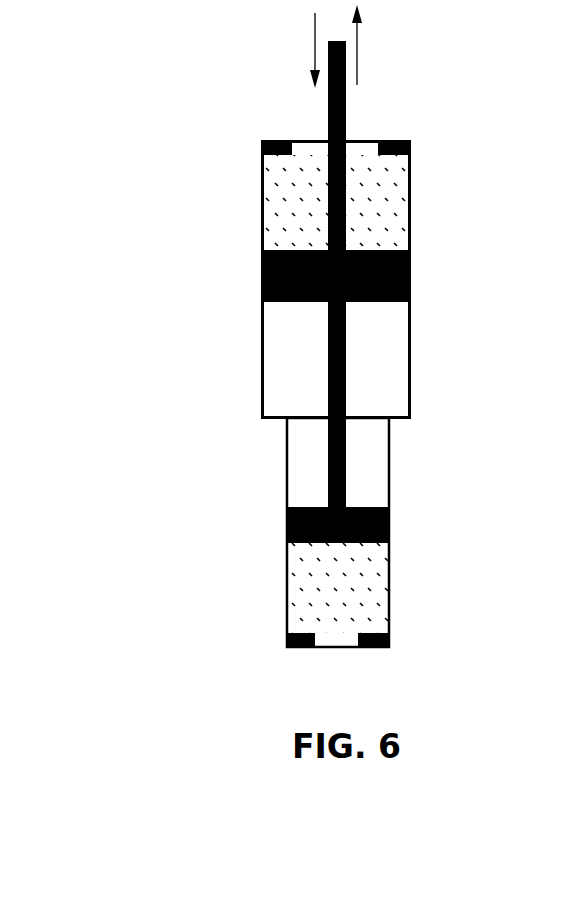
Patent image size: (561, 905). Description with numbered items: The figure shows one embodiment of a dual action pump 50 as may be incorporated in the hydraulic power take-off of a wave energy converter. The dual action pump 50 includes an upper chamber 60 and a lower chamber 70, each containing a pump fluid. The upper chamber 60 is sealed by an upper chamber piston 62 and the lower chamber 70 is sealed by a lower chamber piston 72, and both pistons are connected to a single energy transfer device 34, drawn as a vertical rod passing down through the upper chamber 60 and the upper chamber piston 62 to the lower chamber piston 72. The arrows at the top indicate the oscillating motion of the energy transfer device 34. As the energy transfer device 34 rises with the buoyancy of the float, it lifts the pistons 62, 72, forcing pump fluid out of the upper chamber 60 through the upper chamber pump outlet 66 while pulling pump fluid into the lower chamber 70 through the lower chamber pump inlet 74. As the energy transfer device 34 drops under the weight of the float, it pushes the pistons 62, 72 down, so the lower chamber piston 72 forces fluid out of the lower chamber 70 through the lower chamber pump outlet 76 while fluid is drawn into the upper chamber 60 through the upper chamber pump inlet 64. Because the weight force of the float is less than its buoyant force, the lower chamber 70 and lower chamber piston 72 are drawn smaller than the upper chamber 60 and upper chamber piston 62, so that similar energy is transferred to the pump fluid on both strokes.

The dual action pump 50 is at (130, 176).
The energy transfer device 34 is at (346, 108).
The upper chamber 60 is at (387, 211).
The upper chamber piston 62 is at (410, 273).
The upper chamber pump inlet 64 is at (265, 142).
The upper chamber pump outlet 66 is at (408, 140).
The lower chamber 70 is at (368, 609).
The lower chamber piston 72 is at (390, 530).
The lower chamber pump inlet 74 is at (289, 648).
The lower chamber pump outlet 76 is at (385, 648).